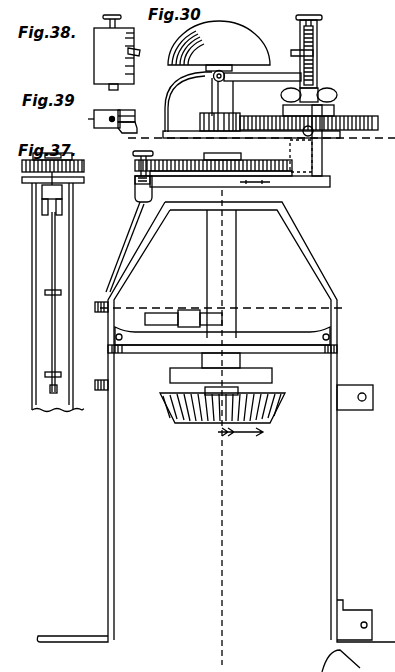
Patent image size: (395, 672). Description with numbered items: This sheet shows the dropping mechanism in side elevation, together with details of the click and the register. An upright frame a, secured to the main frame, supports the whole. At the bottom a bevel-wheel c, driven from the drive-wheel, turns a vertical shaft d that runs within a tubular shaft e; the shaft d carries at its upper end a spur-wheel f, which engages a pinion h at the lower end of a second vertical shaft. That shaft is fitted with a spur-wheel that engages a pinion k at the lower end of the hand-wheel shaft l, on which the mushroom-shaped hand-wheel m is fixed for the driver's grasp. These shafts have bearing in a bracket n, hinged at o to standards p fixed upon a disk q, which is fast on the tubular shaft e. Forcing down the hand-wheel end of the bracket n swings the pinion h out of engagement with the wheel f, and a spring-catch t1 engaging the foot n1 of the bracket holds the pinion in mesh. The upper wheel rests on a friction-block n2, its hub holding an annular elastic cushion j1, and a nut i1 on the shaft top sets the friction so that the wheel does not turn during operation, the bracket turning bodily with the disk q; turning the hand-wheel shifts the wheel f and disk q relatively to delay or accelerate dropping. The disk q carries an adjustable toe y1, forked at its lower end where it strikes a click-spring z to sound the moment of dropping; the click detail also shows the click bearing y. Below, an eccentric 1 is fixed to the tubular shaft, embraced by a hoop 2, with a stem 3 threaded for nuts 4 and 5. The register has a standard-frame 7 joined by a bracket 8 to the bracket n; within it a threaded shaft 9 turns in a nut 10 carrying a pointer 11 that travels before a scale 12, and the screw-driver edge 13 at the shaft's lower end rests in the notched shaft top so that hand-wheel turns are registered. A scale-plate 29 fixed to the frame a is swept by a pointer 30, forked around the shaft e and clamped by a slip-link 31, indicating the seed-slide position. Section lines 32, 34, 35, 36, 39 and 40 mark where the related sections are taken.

In FIG. 38, the section line of horizontal section 39 is at (108, 47).
In FIG. 38, the scale 12 is at (139, 34).
In FIG. 38, the eccentric 1 is at (128, 37).
In FIG. 30, the eccentric 1 is at (185, 364).
In FIG. 38, the hoop or yoke of the eccentric 2 is at (128, 45).
In FIG. 30, the hoop or yoke of the eccentric 2 is at (170, 374).
In FIG. 38, the stem of the eccentric 3 is at (128, 57).
In FIG. 38, the nut 4 is at (128, 65).
In FIG. 30, the nut 4 is at (363, 186).
In FIG. 38, the nut 5 is at (128, 73).
In FIG. 38, the pointer 11 is at (142, 54).
In FIG. 39, the pointer 11 is at (135, 130).
In FIG. 30, the pointer 11 is at (298, 48).
In FIG. 38, the screw-driver edge 13 is at (118, 90).
In FIG. 39, the standard-frame 7 is at (107, 113).
In FIG. 30, the standard-frame 7 is at (312, 51).
In FIG. 39, the vertical shaft 9 is at (132, 117).
In FIG. 30, the vertical shaft 9 is at (313, 62).
In FIG. 39, the nut 10 is at (83, 120).
In FIG. 30, the nut 10 is at (300, 58).
In FIG. 37, the spur-wheel f is at (60, 162).
In FIG. 30, the spur-wheel f is at (213, 159).
In FIG. 37, the upright frame a is at (53, 294).
In FIG. 30, the upright frame a is at (216, 422).
In FIG. 37, the clamp y is at (62, 196).
In FIG. 37, the click-spring z is at (50, 302).
In FIG. 30, the click-spring z is at (125, 247).
In FIG. 30, the hand-wheel m is at (219, 46).
In FIG. 30, the section line 32 is at (220, 336).
In FIG. 30, the bracket 8 is at (258, 76).
In FIG. 30, the bracket n is at (249, 105).
In FIG. 30, the hand-wheel shaft l is at (225, 104).
In FIG. 30, the pinion k is at (215, 117).
In FIG. 30, the annular elastic cushion j1 is at (309, 113).
In FIG. 30, the section line 40 is at (308, 187).
In FIG. 30, the nut i1 is at (311, 91).
In FIG. 30, the hinge o is at (314, 133).
In FIG. 30, the friction-block n2 is at (355, 399).
In FIG. 30, the section line 34 is at (256, 146).
In FIG. 30, the vertical shaft d is at (290, 384).
In FIG. 30, the disk or wheel q is at (240, 185).
In FIG. 30, the adjustable toe y1 is at (136, 176).
In FIG. 30, the standards p is at (306, 140).
In FIG. 30, the pinion h is at (318, 170).
In FIG. 30, the foot of the bracket n1 is at (367, 172).
In FIG. 30, the spring-catch t1 is at (330, 184).
In FIG. 30, the tubular shaft e is at (226, 274).
In FIG. 30, the section line 35 is at (220, 309).
In FIG. 30, the section line 36 is at (219, 352).
In FIG. 30, the scale-plate 29 is at (222, 337).
In FIG. 30, the pointer 30 is at (161, 313).
In FIG. 30, the slip-link 31 is at (194, 316).
In FIG. 30, the bevel-wheel c is at (228, 408).